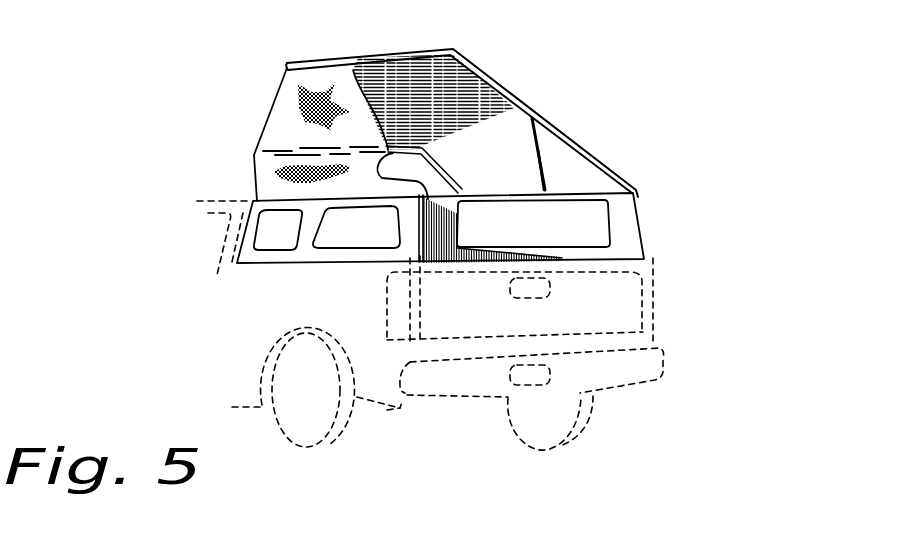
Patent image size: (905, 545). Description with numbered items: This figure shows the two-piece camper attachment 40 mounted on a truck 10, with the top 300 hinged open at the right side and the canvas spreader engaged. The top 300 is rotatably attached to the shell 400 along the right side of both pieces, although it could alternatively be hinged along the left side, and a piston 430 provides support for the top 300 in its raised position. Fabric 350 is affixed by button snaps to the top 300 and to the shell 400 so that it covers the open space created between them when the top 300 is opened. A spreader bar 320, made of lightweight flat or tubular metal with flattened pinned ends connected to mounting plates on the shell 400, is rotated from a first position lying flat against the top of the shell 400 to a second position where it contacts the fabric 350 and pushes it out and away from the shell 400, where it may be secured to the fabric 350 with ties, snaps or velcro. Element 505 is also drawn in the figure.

The truck 10 is at (265, 320).
The camper attachment 40 is at (702, 116).
The top 300 is at (490, 73).
The spreader bar 320 is at (353, 68).
The fabric 350 is at (281, 111).
The shell 400 is at (622, 220).
The piston 430 is at (543, 178).
The brace 505 is at (527, 114).